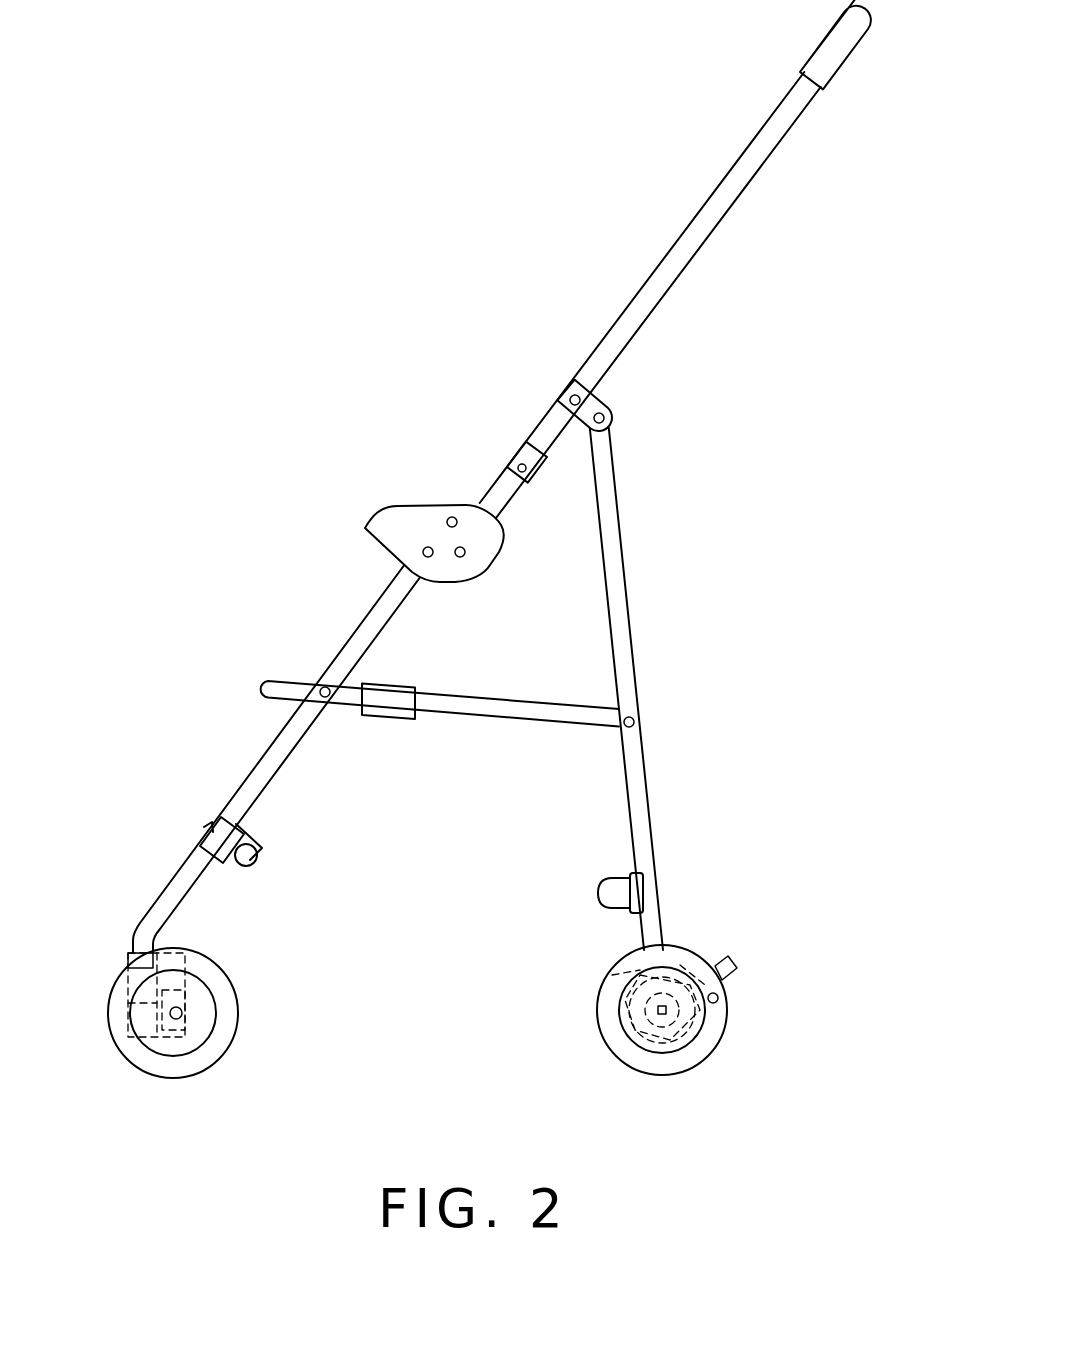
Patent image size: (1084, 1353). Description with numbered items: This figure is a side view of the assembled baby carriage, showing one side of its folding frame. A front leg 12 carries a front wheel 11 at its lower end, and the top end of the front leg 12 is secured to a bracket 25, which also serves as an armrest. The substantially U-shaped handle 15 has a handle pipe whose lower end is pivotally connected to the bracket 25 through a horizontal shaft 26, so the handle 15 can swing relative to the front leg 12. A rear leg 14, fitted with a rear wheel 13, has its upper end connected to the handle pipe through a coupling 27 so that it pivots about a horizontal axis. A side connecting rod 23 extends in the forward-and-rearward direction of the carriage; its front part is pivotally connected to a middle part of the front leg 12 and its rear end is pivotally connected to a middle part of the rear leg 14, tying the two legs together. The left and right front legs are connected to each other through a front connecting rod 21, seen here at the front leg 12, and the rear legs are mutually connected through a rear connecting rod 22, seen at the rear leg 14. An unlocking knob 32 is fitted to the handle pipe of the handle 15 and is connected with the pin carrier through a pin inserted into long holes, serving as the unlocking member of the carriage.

The front wheel 11 is at (238, 1013).
The front leg 12 is at (268, 752).
The rear wheel 13 is at (690, 960).
The rear leg 14 is at (627, 603).
The handle 15 is at (742, 197).
The front connecting rod 21 is at (258, 866).
The rear connecting rod 22 is at (598, 894).
The side connecting rod 23 is at (524, 718).
The bracket 25 is at (410, 518).
The horizontal shaft 26 is at (460, 557).
The coupling 27 is at (610, 404).
The unlocking knob 32 is at (516, 455).